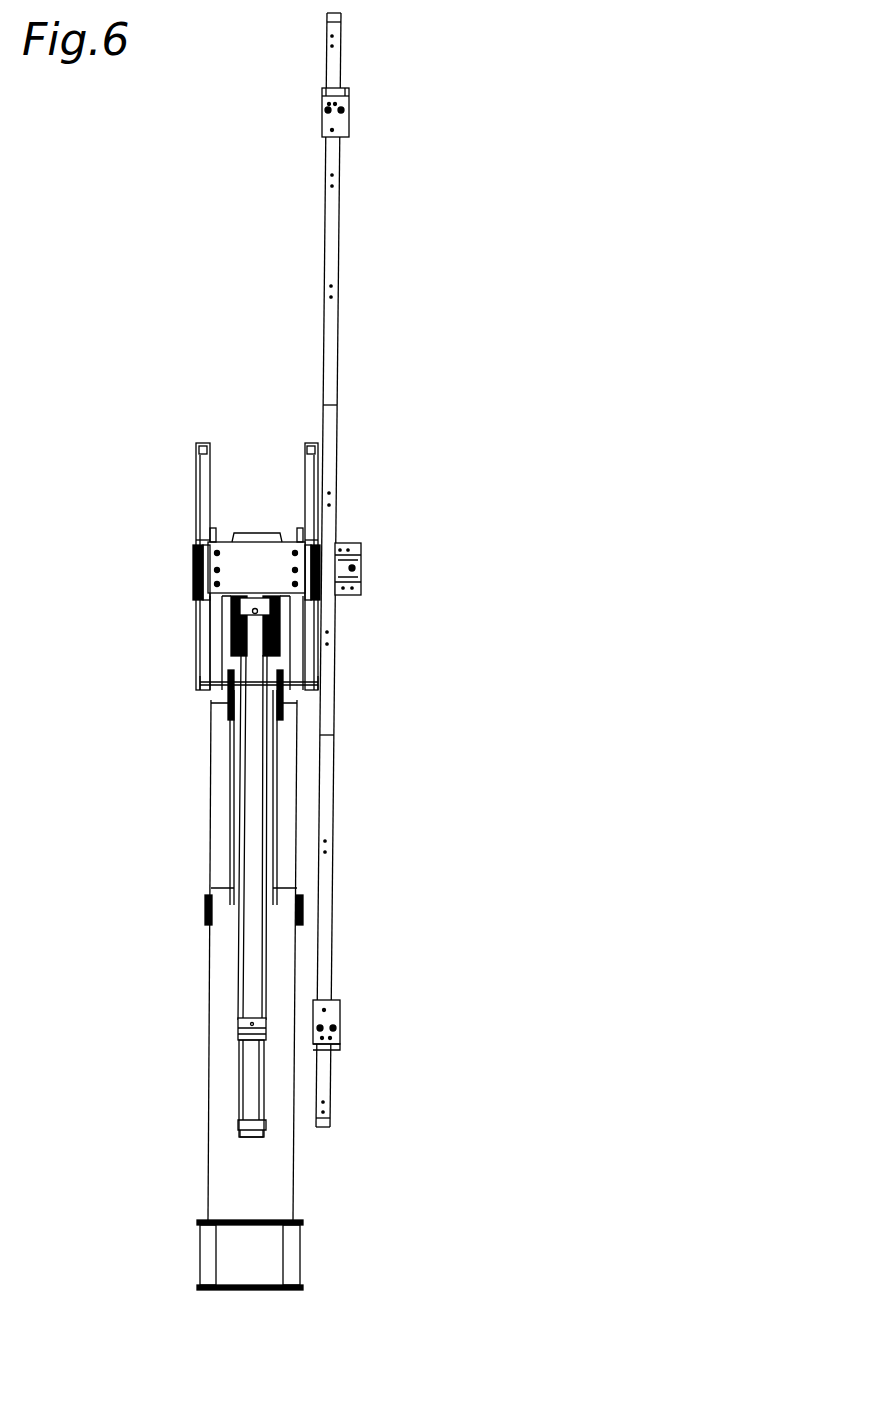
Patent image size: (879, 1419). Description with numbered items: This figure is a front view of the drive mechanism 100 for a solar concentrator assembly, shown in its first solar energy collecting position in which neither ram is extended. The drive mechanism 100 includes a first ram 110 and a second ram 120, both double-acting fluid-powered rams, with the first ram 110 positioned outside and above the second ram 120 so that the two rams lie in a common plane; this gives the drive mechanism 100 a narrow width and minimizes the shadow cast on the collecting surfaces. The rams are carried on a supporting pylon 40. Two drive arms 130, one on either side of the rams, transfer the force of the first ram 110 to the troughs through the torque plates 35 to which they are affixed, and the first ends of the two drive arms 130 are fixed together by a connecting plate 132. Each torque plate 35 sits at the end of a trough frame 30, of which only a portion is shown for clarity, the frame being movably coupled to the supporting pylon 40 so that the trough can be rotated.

The drive mechanism 100 is at (466, 178).
The trough frame 30 is at (340, 238).
The torque plate 35 is at (196, 486).
The connecting plate 132 is at (197, 563).
The drive arm 130 is at (196, 603).
The first ram 110 is at (255, 945).
The second ram 120 is at (250, 1075).
The supporting pylon 40 is at (268, 1190).